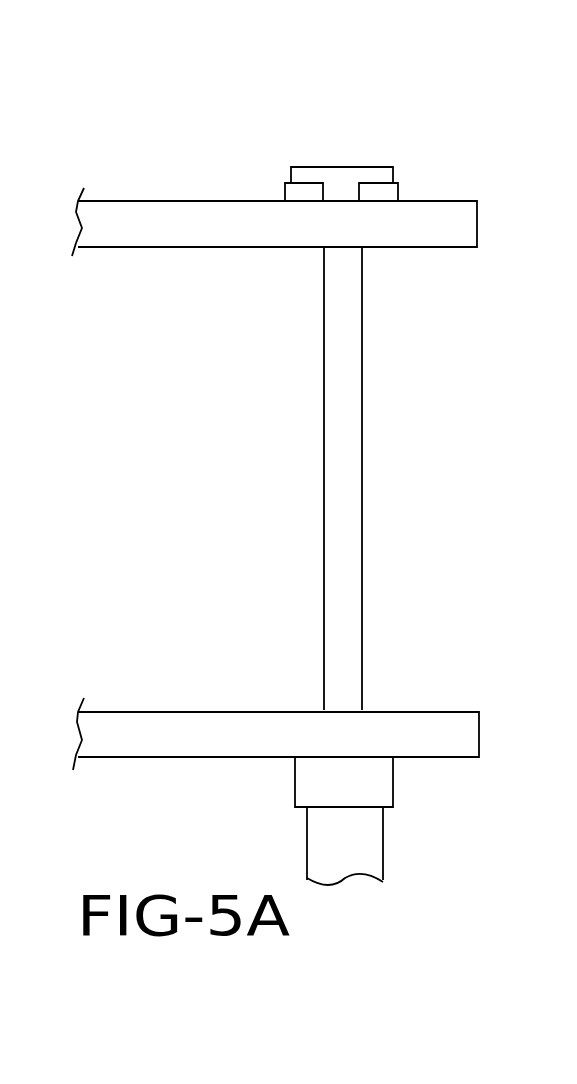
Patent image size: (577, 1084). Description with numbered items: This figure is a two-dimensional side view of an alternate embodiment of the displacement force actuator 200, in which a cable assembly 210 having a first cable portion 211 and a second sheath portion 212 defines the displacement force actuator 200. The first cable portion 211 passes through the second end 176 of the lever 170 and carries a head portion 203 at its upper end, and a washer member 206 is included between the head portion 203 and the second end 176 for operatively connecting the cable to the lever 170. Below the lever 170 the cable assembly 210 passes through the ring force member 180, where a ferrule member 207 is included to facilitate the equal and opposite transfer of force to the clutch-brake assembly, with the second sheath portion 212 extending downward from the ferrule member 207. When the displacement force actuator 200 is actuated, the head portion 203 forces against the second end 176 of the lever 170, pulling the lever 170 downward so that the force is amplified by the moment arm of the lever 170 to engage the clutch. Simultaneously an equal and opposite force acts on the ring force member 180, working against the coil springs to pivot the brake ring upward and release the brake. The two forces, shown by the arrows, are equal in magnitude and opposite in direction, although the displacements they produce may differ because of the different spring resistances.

The lever 170 is at (140, 218).
The second end of the lever 176 is at (213, 215).
The ring force member 180 is at (128, 744).
The displacement force actuator 200 is at (413, 485).
The head portion 203 is at (340, 178).
The washer member 206 is at (295, 192).
The ferrule member 207 is at (375, 788).
The cable assembly 210 is at (437, 555).
The first cable portion 211 is at (340, 383).
The second sheath portion 212 is at (360, 836).